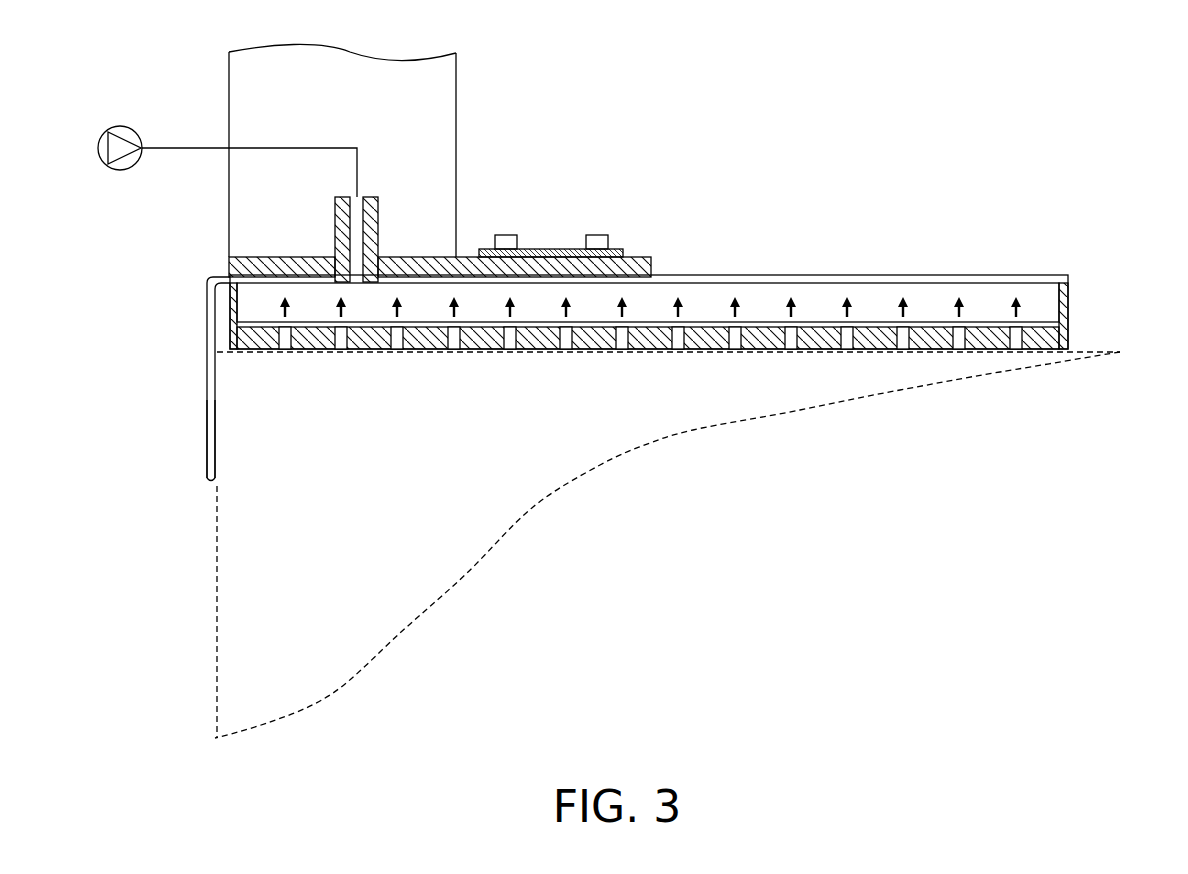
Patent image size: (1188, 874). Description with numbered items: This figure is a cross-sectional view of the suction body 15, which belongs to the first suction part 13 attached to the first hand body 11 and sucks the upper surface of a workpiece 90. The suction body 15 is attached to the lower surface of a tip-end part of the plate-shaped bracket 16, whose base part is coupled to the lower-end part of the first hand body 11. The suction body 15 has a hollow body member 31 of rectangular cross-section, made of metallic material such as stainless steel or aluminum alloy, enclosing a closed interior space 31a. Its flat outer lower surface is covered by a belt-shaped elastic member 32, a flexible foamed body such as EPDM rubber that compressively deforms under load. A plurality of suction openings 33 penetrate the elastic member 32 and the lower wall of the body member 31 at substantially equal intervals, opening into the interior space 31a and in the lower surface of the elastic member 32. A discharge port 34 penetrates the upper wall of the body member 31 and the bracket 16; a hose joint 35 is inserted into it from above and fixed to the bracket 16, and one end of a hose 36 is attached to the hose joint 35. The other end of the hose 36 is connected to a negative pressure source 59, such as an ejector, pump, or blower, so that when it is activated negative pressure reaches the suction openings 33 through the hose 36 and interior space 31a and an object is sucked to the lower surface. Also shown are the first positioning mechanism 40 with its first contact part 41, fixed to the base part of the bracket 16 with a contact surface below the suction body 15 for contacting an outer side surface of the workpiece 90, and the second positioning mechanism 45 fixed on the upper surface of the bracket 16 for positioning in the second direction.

The first hand body 11 is at (457, 83).
The first suction part 13 is at (1056, 179).
The suction body 15 is at (957, 245).
The bracket 16 is at (641, 256).
The body member 31 is at (1070, 290).
The interior space 31a is at (758, 274).
The elastic member 32 is at (1070, 337).
The suction openings 33 is at (343, 352).
The discharge port 34 is at (335, 250).
The hose joint 35 is at (372, 196).
The hose 36 is at (281, 146).
The first positioning mechanism 40 is at (178, 330).
The first contact part 41 is at (206, 410).
The second positioning mechanism 45 is at (549, 249).
The negative pressure source 59 is at (128, 126).
The workpiece 90 is at (657, 428).